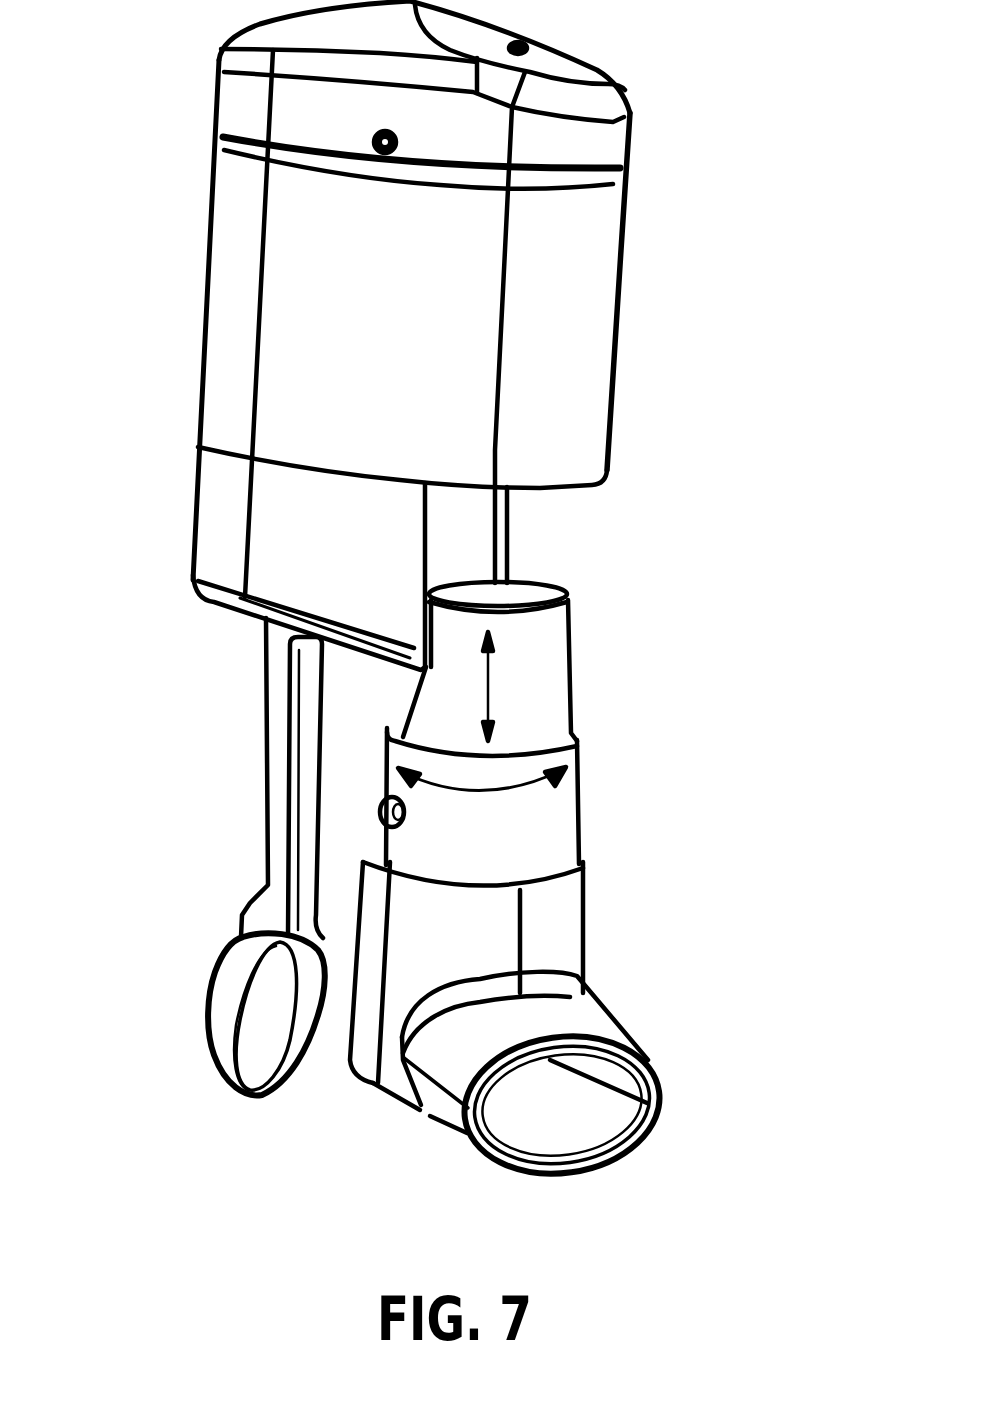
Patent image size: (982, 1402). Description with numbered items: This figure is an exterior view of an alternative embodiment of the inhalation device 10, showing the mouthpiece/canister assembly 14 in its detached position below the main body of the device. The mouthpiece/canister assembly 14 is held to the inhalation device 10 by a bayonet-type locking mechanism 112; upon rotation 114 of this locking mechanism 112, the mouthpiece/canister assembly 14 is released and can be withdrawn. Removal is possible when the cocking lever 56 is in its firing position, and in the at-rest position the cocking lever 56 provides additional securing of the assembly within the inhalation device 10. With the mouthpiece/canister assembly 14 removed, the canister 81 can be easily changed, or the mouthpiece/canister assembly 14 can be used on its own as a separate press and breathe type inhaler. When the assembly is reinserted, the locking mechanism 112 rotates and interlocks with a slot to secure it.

The inhalation device 10 is at (672, 285).
The mouthpiece/canister assembly 14 is at (571, 613).
The canister 81 is at (576, 679).
The bayonet-type locking mechanism 112 is at (381, 803).
The rotation 114 is at (482, 814).
The cocking lever 56 is at (266, 795).